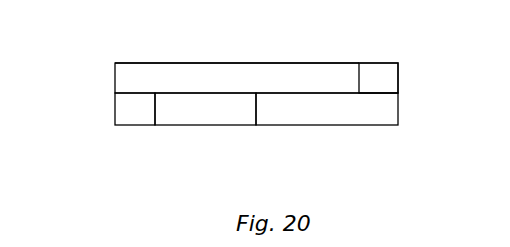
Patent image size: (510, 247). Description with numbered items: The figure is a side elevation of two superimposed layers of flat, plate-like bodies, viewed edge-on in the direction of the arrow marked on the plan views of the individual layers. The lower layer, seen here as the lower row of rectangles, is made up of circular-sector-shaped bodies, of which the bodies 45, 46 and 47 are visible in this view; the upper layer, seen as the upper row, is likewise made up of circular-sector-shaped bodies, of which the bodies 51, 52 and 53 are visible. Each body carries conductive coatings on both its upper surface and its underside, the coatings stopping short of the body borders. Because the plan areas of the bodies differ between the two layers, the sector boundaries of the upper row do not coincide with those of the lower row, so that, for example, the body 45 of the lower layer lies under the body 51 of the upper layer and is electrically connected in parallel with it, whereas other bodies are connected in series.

The body 51 is at (125, 80).
The body 52 is at (275, 78).
The body 53 is at (373, 75).
The body 45 is at (133, 107).
The body 46 is at (220, 108).
The body 47 is at (348, 113).